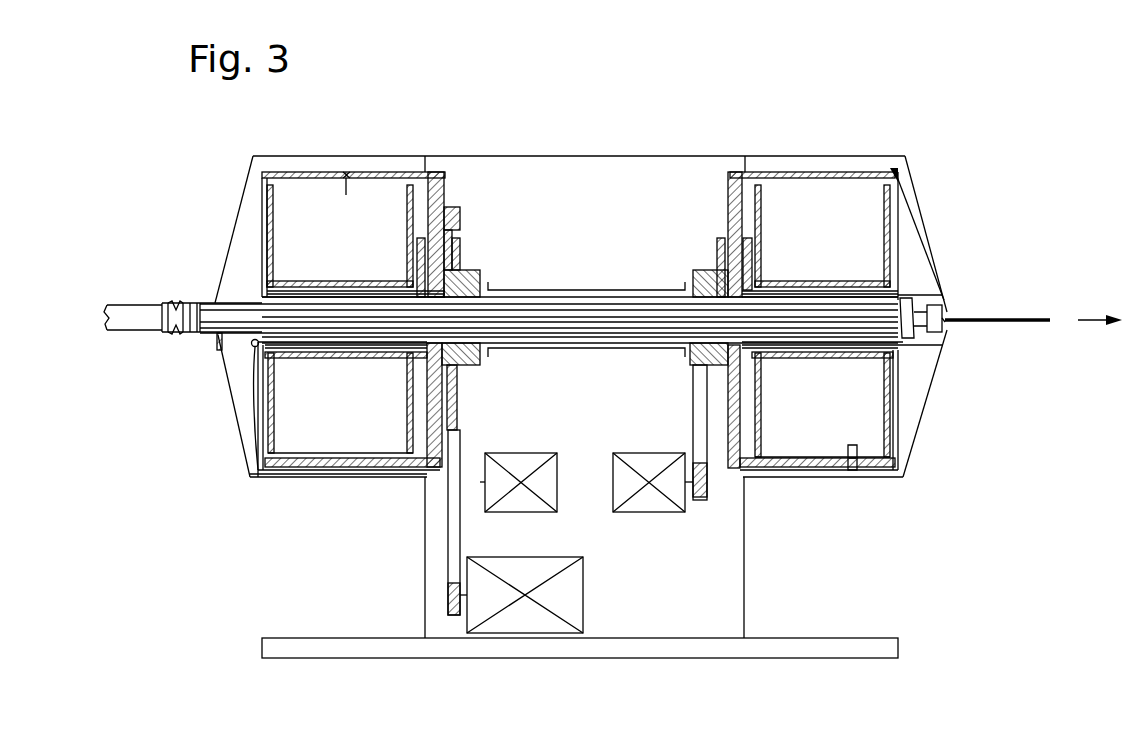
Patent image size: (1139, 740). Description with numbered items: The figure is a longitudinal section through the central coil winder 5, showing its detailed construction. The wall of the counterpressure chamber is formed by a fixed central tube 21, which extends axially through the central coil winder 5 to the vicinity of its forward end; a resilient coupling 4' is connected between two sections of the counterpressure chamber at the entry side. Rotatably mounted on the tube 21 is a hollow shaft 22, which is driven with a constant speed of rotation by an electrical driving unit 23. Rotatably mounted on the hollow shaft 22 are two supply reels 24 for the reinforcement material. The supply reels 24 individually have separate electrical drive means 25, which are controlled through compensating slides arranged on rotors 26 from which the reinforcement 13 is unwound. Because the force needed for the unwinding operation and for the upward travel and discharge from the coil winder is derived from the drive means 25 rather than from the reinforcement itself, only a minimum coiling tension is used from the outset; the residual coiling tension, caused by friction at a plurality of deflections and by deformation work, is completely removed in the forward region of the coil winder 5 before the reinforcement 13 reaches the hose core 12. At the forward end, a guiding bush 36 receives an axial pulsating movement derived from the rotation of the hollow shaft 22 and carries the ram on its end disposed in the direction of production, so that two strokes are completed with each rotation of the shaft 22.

The central coil winder 5 is at (762, 136).
The hose core 12 is at (630, 318).
The reinforcement 13 is at (917, 222).
The central tube 21 is at (238, 305).
The hollow shaft 22 is at (539, 344).
The electrical driving unit 23 is at (578, 608).
The supply reel 24 is at (265, 430).
The electrical drive means 25 is at (613, 488).
The rotor 26 is at (442, 190).
The guiding bush 36 is at (935, 312).
The resilient coupling 4' is at (169, 347).